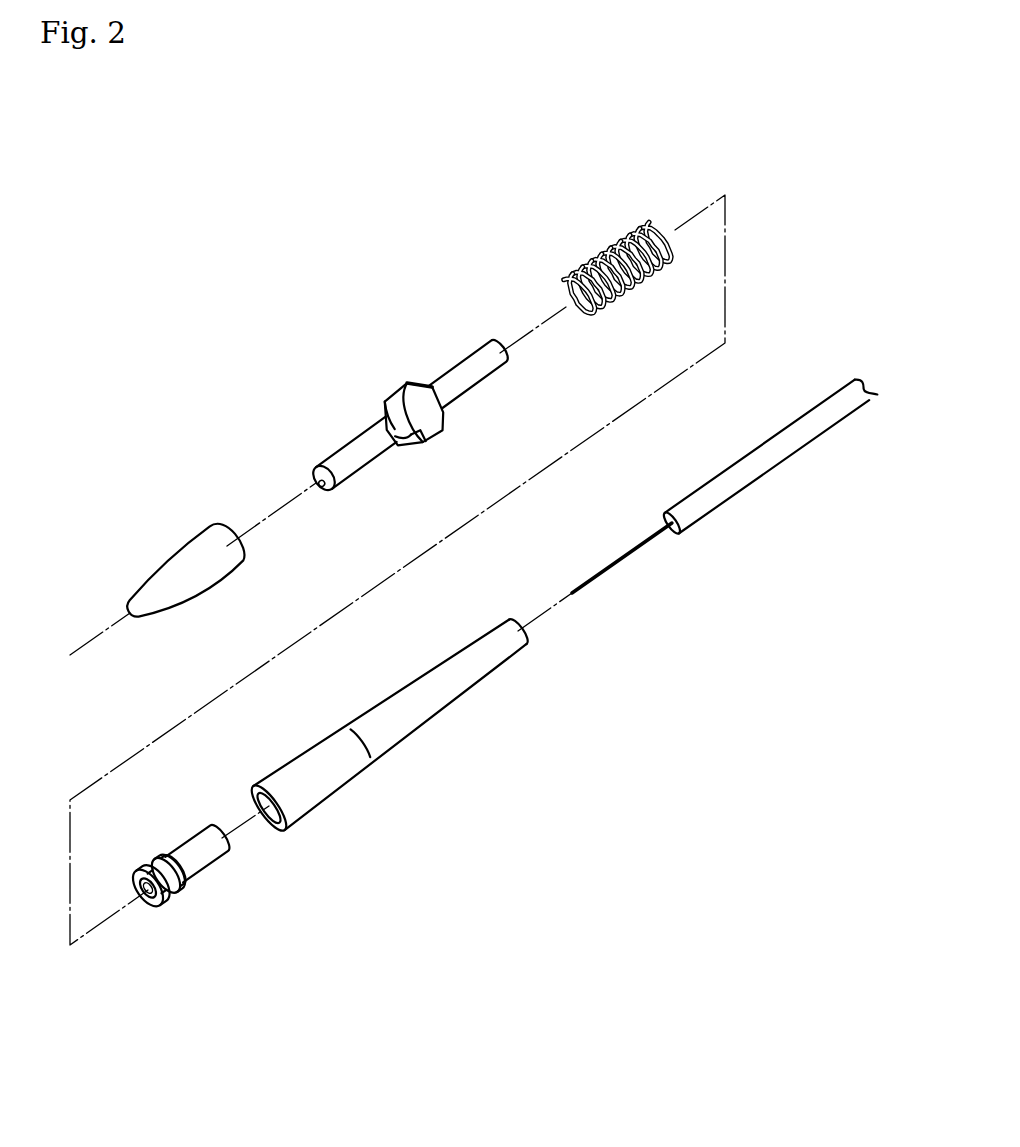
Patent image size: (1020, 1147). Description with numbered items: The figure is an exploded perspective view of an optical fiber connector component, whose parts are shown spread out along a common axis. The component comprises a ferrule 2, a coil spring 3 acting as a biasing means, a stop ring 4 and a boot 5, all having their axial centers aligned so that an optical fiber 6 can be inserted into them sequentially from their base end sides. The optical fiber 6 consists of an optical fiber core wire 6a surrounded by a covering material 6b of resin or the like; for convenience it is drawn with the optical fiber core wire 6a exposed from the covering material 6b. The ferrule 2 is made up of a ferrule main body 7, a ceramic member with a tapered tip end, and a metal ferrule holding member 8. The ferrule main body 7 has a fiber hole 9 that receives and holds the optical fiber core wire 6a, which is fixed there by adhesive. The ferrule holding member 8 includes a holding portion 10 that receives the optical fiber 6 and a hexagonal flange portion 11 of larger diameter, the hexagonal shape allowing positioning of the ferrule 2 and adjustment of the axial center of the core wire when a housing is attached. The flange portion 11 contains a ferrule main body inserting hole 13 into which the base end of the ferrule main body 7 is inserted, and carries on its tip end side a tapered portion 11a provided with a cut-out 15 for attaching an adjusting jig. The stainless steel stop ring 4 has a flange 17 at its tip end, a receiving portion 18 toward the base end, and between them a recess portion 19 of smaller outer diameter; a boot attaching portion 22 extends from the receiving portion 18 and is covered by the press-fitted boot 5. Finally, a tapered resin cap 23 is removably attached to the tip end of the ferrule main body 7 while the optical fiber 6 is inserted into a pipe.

The ferrule 2 is at (370, 413).
The coil spring 3 is at (612, 250).
The stop ring 4 is at (194, 868).
The boot 5 is at (408, 697).
The optical fiber 6 is at (747, 526).
The optical fiber core wire 6a is at (650, 548).
The covering material 6b is at (745, 487).
The ferrule main body 7 is at (353, 449).
The ferrule holding member 8 is at (407, 386).
The fiber hole 9 is at (318, 488).
The holding portion 10 is at (444, 338).
The flange portion 11 is at (402, 386).
The tapered portion 11a is at (398, 400).
The ferrule main body inserting hole 13 is at (403, 446).
The cut-out 15 is at (425, 434).
The flange 17 is at (165, 893).
The receiving portion 18 is at (182, 884).
The recess portion 19 is at (160, 870).
The boot attaching portion 22 is at (193, 846).
The cap 23 is at (198, 560).